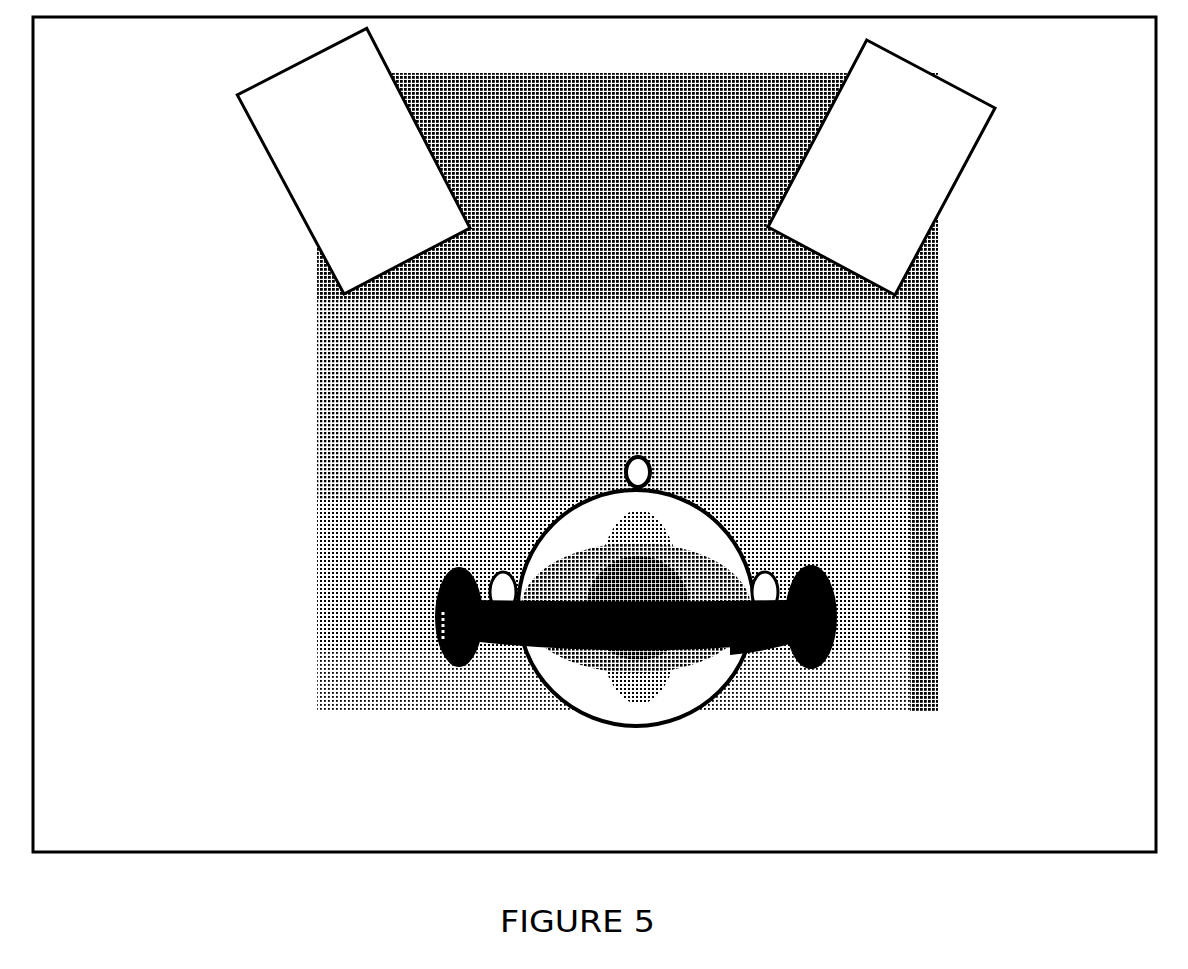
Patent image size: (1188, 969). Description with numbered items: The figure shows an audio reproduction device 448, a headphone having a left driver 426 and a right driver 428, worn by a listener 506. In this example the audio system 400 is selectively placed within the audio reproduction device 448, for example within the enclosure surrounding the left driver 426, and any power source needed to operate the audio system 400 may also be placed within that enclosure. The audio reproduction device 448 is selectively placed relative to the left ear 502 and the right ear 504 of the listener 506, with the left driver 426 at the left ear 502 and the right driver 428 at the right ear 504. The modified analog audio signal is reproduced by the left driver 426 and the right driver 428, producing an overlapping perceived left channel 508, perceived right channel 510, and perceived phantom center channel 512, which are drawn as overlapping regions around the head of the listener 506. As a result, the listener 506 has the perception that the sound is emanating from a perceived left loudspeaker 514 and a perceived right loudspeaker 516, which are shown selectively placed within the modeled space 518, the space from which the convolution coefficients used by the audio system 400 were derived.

The audio system 400 is at (440, 638).
The left driver 426 is at (440, 602).
The right driver 428 is at (838, 632).
The audio reproduction device 448 is at (757, 643).
The left ear 502 is at (495, 578).
The right ear 504 is at (772, 562).
The listener 506 is at (680, 487).
The perceived left channel 508 is at (567, 667).
The perceived right channel 510 is at (708, 673).
The perceived phantom center channel 512 is at (642, 693).
The perceived left loudspeaker 514 is at (327, 205).
The perceived right loudspeaker 516 is at (903, 128).
The modeled space 518 is at (613, 18).